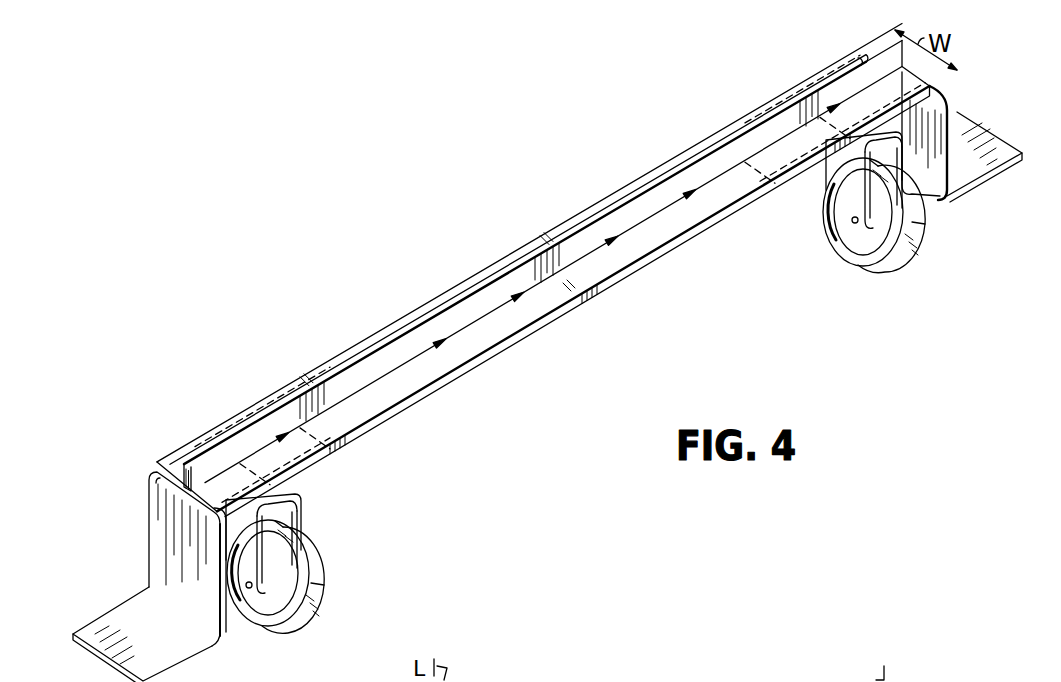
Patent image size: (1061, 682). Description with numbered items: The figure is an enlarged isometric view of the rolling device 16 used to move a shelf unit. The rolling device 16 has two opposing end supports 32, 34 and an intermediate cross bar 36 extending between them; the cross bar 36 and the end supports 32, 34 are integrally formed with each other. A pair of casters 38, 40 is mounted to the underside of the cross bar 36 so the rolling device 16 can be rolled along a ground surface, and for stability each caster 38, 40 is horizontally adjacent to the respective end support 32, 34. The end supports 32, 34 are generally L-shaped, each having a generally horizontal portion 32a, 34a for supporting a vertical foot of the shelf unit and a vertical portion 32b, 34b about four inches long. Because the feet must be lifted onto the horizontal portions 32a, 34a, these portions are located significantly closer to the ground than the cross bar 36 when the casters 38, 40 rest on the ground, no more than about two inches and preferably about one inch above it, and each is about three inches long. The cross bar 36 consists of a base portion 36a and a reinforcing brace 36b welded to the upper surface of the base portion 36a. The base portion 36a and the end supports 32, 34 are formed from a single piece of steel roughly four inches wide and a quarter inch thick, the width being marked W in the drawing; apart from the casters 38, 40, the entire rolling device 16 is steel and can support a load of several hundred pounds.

The rolling device 16 is at (495, 221).
The end support 32 is at (139, 535).
The horizontal portion 32a is at (130, 617).
The vertical portion 32b is at (148, 506).
The end support 34 is at (954, 100).
The horizontal portion 34a is at (990, 143).
The vertical portion 34b is at (934, 202).
The cross bar 36 is at (429, 299).
The base portion 36a is at (600, 278).
The reinforcing brace 36b is at (574, 242).
The caster 38 is at (317, 557).
The caster 40 is at (878, 264).